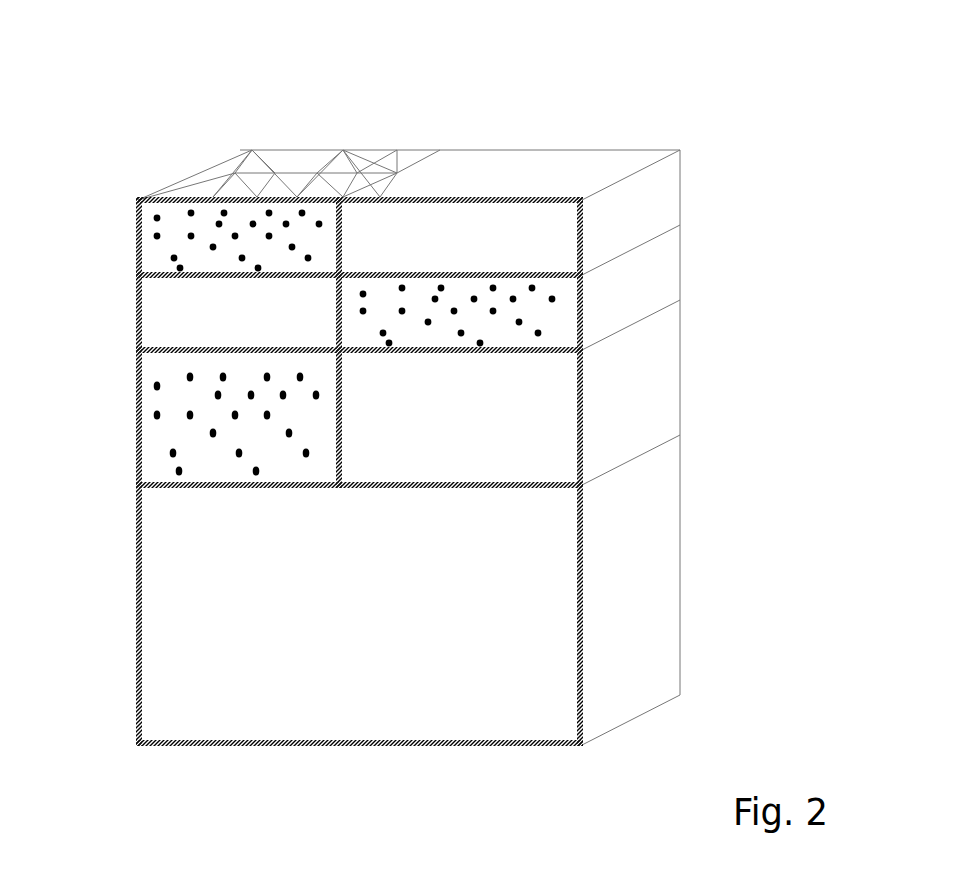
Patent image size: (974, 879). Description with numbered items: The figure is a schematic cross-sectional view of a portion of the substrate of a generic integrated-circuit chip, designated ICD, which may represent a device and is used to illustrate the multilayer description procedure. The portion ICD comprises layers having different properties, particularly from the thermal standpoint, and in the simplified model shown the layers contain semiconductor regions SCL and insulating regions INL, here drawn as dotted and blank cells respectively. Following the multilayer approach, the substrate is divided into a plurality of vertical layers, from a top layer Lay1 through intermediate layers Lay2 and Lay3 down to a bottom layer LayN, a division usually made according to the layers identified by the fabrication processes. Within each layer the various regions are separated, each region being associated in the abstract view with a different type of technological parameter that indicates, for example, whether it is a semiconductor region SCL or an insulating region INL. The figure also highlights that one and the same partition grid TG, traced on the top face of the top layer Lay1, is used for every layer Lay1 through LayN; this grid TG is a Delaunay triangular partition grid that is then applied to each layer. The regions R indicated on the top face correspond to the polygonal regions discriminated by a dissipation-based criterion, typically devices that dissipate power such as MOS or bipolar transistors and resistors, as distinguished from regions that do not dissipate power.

The portion of substrate of integrated circuit chip ICD is at (697, 352).
The semiconductor region SCL is at (140, 197).
The insulating region INL is at (517, 225).
The partition grid TG is at (330, 163).
The region R is at (345, 158).
The top layer Lay1 is at (61, 237).
The second layer Lay2 is at (61, 305).
The third layer Lay3 is at (61, 415).
The bottom layer LayN is at (66, 590).